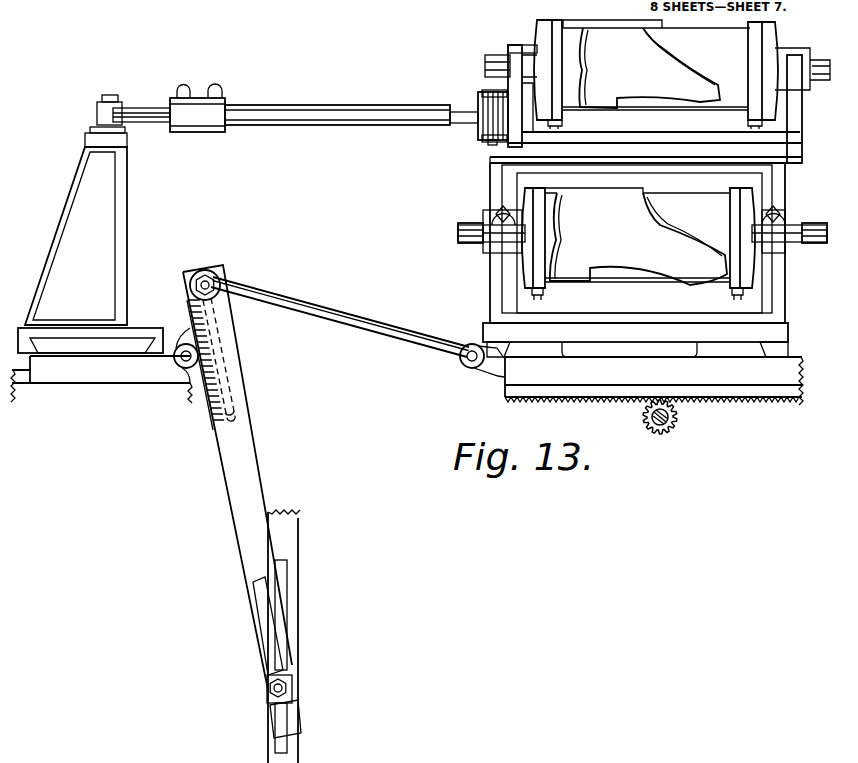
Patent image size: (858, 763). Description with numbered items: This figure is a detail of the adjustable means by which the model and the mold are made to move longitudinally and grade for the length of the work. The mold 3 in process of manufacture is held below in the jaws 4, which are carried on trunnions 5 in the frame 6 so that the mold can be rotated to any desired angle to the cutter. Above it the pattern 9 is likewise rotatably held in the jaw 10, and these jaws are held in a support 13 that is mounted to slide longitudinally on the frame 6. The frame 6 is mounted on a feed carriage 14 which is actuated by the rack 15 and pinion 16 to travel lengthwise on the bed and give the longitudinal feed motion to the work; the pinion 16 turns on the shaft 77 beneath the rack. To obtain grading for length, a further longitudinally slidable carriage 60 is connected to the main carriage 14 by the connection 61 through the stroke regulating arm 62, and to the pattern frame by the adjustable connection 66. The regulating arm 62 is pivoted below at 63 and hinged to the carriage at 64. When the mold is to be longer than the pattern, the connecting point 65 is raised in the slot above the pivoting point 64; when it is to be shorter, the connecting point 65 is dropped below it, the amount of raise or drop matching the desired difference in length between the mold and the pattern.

The mold 3 is at (675, 207).
The jaws 4 is at (535, 205).
The trunnions 5 is at (458, 231).
The frame 6 is at (490, 295).
The pattern 9 is at (690, 35).
The jaw 10 is at (540, 35).
The support 13 is at (513, 88).
The feed carriage 14 is at (727, 373).
The rack 15 is at (703, 403).
The pinion 16 is at (657, 430).
The pinion shaft 77 is at (667, 423).
The longitudinally slidable carriage 60 is at (107, 350).
The connection 61 is at (303, 304).
The stroke regulating arm 62 is at (242, 383).
The pivot 63 is at (285, 688).
The hinge 64 is at (182, 346).
The connecting point 65 is at (213, 267).
The adjustable connection 66 is at (325, 127).